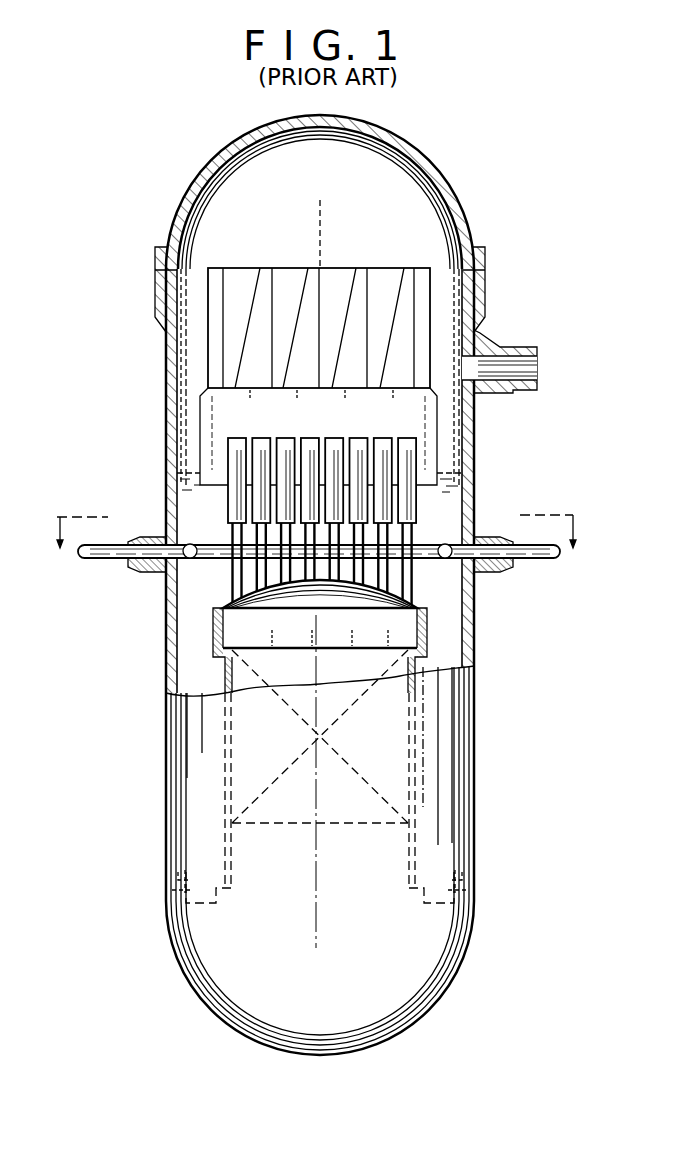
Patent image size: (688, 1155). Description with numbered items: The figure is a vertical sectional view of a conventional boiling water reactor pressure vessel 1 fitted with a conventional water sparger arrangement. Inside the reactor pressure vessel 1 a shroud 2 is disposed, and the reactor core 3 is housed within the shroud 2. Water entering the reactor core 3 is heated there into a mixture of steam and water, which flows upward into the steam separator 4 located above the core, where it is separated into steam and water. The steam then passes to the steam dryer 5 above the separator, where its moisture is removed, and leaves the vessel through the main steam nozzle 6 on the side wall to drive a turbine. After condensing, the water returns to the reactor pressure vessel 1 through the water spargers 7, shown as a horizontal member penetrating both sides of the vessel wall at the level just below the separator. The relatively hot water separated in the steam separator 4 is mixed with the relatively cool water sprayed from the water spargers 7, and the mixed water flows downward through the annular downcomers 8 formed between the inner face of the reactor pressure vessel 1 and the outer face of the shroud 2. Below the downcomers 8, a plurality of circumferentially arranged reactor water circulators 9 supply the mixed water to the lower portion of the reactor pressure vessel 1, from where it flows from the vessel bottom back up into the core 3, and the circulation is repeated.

The reactor pressure vessel 1 is at (477, 615).
The shroud 2 is at (222, 672).
The reactor core 3 is at (345, 675).
The steam separator 4 is at (415, 449).
The steam dryer 5 is at (419, 268).
The main steam nozzle 6 is at (497, 347).
The water sparger 7 is at (190, 541).
The annular downcomer 8 is at (188, 684).
The reactor water circulator 9 is at (178, 873).